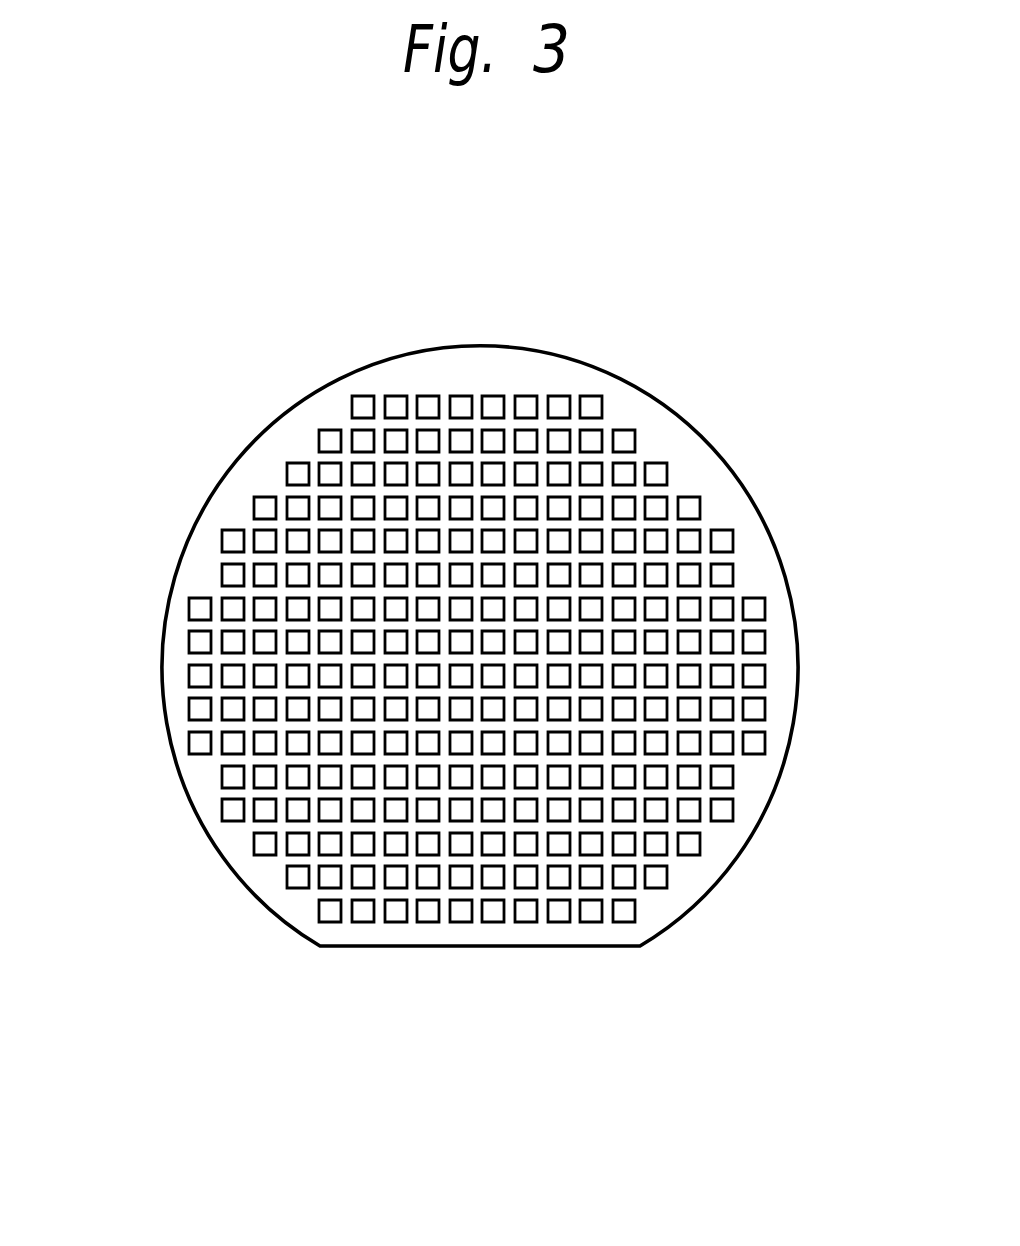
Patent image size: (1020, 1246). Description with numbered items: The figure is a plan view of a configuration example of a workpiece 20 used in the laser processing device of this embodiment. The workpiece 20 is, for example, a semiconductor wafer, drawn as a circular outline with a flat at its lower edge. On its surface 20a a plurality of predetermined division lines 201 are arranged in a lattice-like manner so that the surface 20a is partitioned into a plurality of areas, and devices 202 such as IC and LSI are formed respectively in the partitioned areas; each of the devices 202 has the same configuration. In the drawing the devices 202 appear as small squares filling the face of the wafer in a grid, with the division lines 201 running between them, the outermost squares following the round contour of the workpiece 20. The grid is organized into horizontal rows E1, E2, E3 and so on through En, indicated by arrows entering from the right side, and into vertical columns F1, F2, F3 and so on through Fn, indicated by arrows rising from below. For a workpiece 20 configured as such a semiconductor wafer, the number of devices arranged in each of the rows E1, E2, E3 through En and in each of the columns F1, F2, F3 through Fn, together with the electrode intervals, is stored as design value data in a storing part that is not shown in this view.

The workpiece 20 is at (607, 336).
The surface 20a is at (228, 497).
The predetermined division lines 201 is at (414, 702).
The devices 202 is at (198, 611).
The row E1 is at (612, 407).
The row E2 is at (645, 441).
The row E3 is at (677, 474).
The row En is at (838, 500).
The column F1 is at (200, 764).
The column F2 is at (233, 798).
The column F3 is at (265, 831).
The column Fn is at (298, 1048).